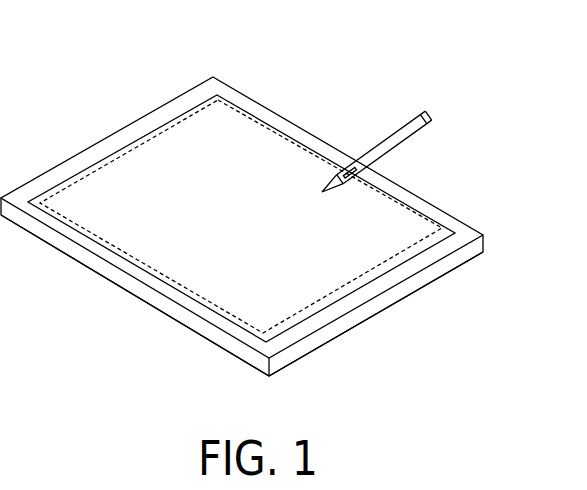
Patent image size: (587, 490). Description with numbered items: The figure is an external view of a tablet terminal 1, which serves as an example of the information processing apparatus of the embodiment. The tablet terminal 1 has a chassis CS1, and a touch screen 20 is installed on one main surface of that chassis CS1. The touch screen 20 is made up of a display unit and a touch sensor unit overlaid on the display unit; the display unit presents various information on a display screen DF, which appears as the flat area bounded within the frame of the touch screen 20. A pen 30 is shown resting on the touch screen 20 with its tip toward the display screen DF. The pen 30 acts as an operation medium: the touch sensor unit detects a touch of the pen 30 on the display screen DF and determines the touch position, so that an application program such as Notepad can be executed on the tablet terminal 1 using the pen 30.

The tablet terminal 1 is at (311, 88).
The chassis CS1 is at (118, 279).
The display screen DF is at (375, 244).
The touch screen 20 is at (350, 312).
The pen 30 is at (407, 133).